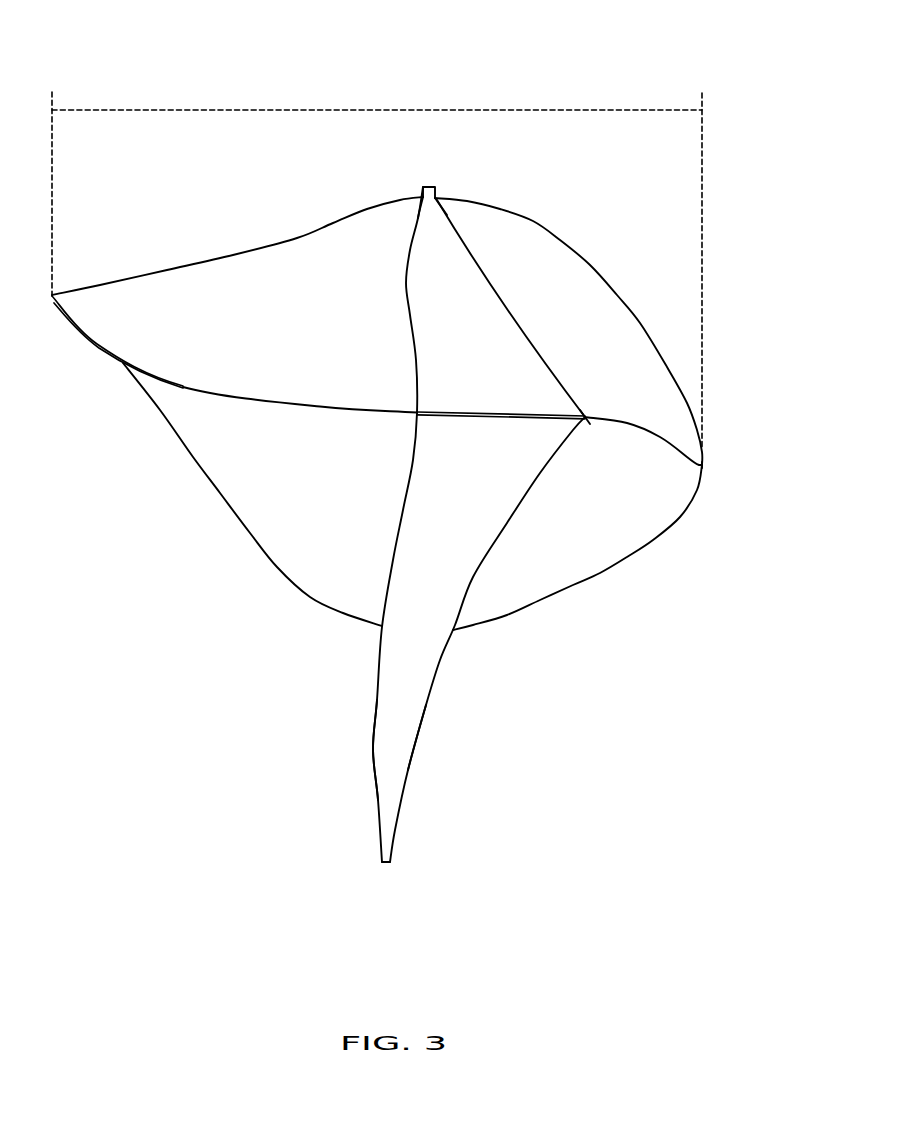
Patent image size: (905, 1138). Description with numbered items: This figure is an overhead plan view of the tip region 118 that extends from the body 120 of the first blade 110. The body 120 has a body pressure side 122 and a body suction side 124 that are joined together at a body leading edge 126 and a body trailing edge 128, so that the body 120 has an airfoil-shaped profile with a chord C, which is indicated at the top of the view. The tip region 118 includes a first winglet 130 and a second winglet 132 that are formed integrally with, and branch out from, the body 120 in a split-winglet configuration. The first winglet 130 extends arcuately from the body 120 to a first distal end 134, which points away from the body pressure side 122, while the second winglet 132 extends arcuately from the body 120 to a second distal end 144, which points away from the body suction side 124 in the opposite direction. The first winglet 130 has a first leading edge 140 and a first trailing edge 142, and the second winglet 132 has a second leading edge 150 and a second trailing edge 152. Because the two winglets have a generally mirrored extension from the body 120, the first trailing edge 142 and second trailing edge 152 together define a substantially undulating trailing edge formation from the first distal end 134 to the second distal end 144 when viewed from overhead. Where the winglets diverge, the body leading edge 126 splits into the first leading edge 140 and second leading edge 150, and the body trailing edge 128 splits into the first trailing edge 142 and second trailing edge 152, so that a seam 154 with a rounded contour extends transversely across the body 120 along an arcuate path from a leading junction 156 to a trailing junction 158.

The first blade 110 is at (118, 55).
The chord C is at (513, 110).
The tip region 118 is at (428, 713).
The body 120 is at (603, 575).
The body pressure side 122 is at (310, 598).
The body suction side 124 is at (298, 237).
The body leading edge 126 is at (703, 462).
The body trailing edge 128 is at (53, 310).
The first winglet 130 is at (396, 535).
The second winglet 132 is at (409, 318).
The first distal end 134 is at (387, 865).
The first leading edge 140 is at (410, 767).
The first trailing edge 142 is at (372, 755).
The second distal end 144 is at (427, 187).
The second leading edge 150 is at (466, 248).
The second trailing edge 152 is at (413, 228).
The seam 154 is at (479, 420).
The leading junction 156 is at (587, 420).
The trailing junction 158 is at (416, 416).